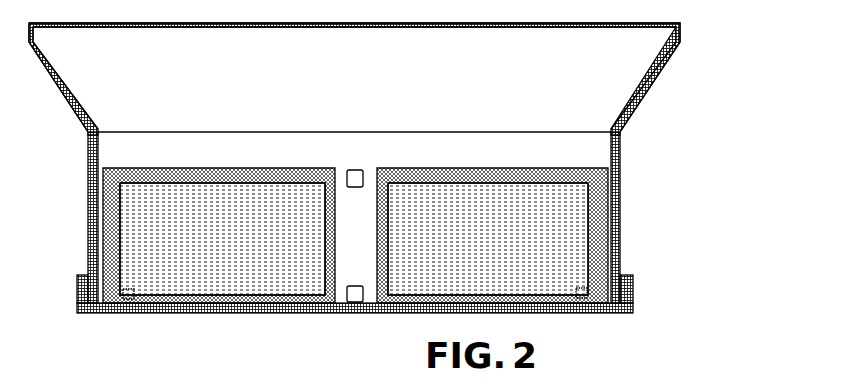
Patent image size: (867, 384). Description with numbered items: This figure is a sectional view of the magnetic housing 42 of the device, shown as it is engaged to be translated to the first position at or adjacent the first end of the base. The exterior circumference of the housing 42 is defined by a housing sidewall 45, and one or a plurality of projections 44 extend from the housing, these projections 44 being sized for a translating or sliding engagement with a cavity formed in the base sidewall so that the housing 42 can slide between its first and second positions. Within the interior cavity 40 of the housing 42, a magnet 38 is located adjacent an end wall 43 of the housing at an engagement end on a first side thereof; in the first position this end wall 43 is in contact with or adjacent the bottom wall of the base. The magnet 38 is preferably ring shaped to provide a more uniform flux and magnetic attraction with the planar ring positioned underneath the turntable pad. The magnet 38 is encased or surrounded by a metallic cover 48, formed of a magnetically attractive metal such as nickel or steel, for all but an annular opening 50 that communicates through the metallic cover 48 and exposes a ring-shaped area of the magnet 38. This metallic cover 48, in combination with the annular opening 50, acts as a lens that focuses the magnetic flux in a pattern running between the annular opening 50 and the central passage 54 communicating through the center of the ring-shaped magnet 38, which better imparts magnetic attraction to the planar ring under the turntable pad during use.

The magnet 38 is at (207, 278).
The interior cavity 40 is at (597, 148).
The housing 42 is at (695, 153).
The end wall 43 is at (257, 310).
The projections 44 is at (78, 287).
The housing sidewall 45 is at (617, 217).
The metallic cover 48 is at (115, 217).
The annular opening 50 is at (128, 307).
The central passage 54 is at (363, 257).